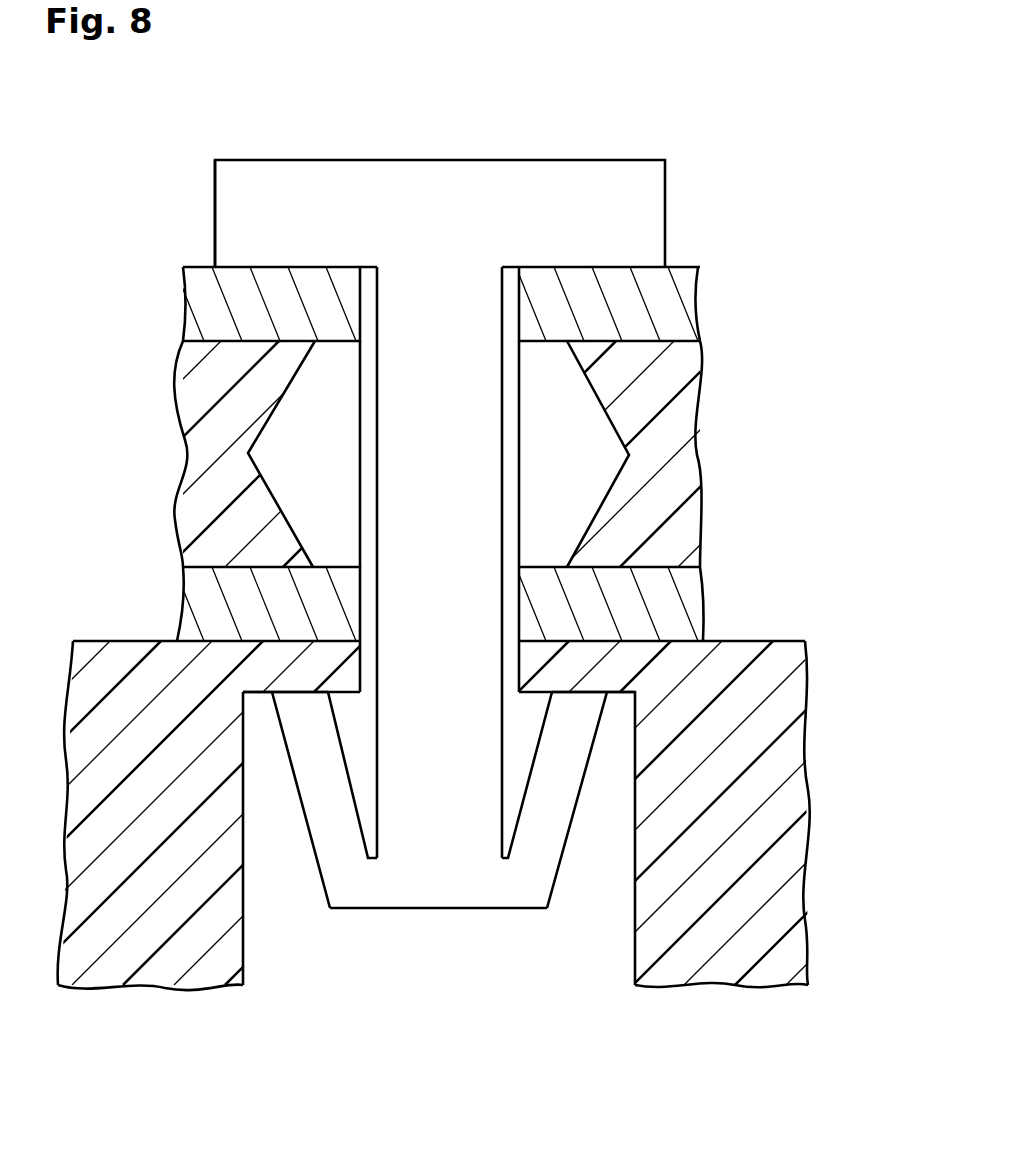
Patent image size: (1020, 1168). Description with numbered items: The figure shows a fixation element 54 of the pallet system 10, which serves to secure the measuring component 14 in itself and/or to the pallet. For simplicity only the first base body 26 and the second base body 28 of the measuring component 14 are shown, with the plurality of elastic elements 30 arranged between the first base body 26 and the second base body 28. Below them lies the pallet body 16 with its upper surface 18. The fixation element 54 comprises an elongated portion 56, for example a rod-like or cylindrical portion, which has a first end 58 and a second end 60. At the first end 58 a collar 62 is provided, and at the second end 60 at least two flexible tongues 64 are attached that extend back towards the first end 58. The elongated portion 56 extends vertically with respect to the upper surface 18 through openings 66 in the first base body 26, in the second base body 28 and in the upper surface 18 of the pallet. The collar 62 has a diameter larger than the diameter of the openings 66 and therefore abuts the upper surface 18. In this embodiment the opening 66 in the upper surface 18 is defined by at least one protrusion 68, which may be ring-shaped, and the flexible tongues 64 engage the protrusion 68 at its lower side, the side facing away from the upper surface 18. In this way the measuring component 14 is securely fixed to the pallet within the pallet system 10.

The pallet system 10 is at (672, 126).
The measuring component 14 is at (683, 245).
The pallet body 16 is at (797, 793).
The upper surface 18 is at (774, 626).
The first base body 26 is at (683, 301).
The second base body 28 is at (686, 604).
The elastic elements 30 is at (683, 413).
The fixation element 54 is at (583, 173).
The elongated portion 56 is at (432, 315).
The first end 58 is at (487, 260).
The second end 60 is at (410, 928).
The collar 62 is at (230, 209).
The flexible tongues 64 is at (328, 818).
The openings 66 is at (370, 256).
The protrusion 68 is at (614, 682).